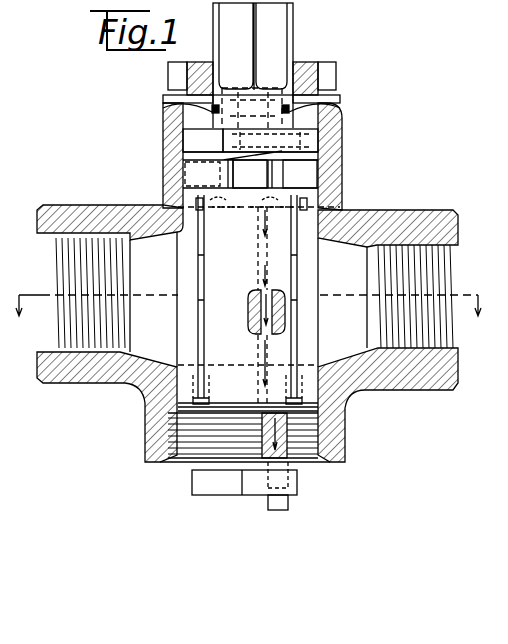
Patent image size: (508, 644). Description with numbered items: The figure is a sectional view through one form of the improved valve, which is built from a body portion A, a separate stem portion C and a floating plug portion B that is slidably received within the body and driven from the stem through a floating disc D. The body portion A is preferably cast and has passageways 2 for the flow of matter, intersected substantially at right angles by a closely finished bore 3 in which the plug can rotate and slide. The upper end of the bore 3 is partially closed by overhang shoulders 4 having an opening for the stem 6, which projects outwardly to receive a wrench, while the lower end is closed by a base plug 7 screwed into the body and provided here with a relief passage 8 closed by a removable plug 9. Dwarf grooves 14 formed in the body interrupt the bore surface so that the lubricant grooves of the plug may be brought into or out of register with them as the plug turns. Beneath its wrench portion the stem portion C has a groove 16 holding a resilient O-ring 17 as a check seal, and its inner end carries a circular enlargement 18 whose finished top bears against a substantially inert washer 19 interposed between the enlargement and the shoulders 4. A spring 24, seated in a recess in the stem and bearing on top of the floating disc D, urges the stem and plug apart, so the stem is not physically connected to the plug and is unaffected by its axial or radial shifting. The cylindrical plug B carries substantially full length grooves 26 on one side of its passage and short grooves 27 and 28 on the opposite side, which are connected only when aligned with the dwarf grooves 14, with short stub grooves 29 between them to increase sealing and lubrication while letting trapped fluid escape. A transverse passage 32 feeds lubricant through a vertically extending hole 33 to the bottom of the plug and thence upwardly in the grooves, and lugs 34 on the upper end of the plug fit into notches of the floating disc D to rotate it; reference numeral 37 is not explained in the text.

The passageways 2 is at (247, 312).
The bore 3 is at (336, 143).
The overhang shoulders 4 is at (166, 108).
The stem 6 is at (293, 58).
The base plug 7 is at (297, 493).
The relief passage 8 is at (300, 462).
The removable plug 9 is at (288, 508).
The dwarf grooves 14 is at (208, 398).
The groove 16 is at (187, 104).
The O-ring 17 is at (318, 98).
The circular enlargement 18 is at (250, 140).
The washer 19 is at (330, 127).
The spring 24 is at (343, 158).
The full length grooves 26 is at (299, 286).
The short groove 27 is at (205, 294).
The short groove 28 is at (209, 407).
The stub grooves 29 is at (163, 205).
The transverse passage 32 is at (219, 201).
The vertically extending hole 33 is at (261, 281).
The lugs 34 is at (250, 174).
The spring 37 is at (278, 201).
The body portion A is at (343, 192).
The floating plug portion B is at (259, 286).
The stem portion C is at (253, 49).
The floating disc D is at (300, 174).